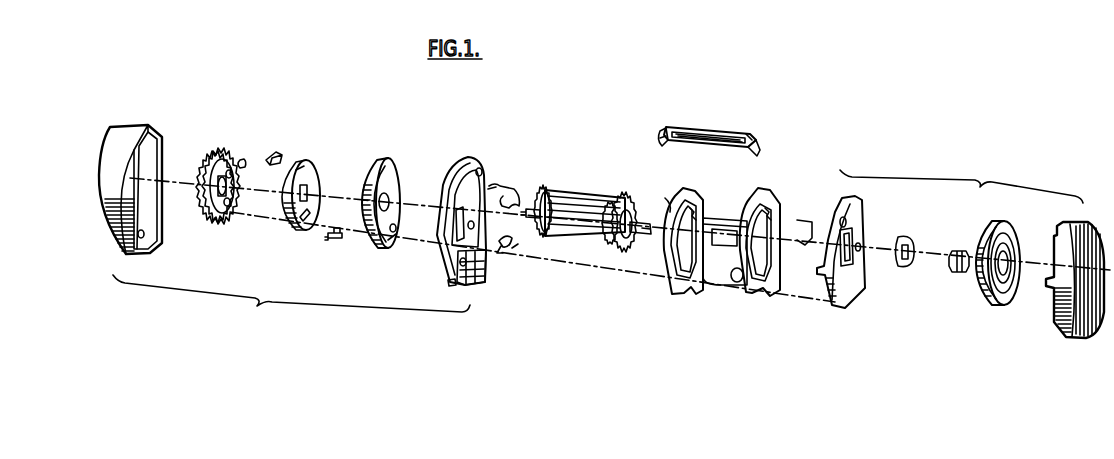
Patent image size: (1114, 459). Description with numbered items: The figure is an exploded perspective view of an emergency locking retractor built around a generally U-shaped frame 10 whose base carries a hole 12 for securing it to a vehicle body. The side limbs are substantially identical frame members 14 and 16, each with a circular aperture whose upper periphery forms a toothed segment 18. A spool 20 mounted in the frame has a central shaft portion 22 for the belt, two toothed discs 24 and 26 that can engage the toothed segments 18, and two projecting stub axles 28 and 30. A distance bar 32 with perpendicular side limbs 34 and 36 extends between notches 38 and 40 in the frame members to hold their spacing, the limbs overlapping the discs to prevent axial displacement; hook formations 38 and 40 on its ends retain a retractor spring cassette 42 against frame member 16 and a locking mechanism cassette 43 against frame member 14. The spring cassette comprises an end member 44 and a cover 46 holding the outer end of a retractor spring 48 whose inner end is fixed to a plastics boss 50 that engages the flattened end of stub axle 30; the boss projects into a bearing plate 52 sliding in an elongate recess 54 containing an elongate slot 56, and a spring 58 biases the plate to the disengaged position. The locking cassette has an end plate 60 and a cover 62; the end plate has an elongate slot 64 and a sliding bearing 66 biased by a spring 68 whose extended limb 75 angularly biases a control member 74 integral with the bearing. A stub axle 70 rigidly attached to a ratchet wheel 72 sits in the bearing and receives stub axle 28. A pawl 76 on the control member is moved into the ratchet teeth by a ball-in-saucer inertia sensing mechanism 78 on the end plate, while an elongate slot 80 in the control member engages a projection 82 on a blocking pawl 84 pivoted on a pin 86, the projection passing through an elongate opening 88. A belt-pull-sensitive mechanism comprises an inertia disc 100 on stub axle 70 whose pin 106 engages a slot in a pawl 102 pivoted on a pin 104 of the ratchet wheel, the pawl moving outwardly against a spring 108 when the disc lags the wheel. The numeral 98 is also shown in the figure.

The frame 10 is at (714, 222).
The hole 12 is at (740, 283).
The frame member 14 is at (681, 191).
The frame member 16 is at (765, 197).
The toothed segment 18 is at (695, 212).
The spool 20 is at (586, 216).
The central shaft portion 22 is at (584, 238).
The toothed disc 24 is at (546, 189).
The toothed disc 26 is at (625, 196).
The stub axle 28 is at (530, 222).
The stub axle 30 is at (637, 241).
The distance bar 32 is at (704, 128).
The side limb 34 is at (660, 146).
The side limb 36 is at (762, 152).
The notch / hook formation 38 is at (754, 138).
The notch / hook formation 40 is at (663, 134).
The retractor spring cassette 42 is at (961, 176).
The locking mechanism cassette 43 is at (291, 309).
The end member 44 is at (856, 302).
The cover 46 is at (1089, 339).
The retractor spring 48 is at (987, 305).
The plastics boss 50 is at (954, 274).
The bearing plate 52 is at (906, 270).
The elongate recess 54 is at (848, 224).
The elongate slot 56 is at (856, 236).
The spring 58 is at (810, 221).
The end plate 60 is at (461, 162).
The cover 62 is at (130, 126).
The elongate slot 64 is at (447, 230).
The sliding bearing 66 is at (396, 188).
The spring 68 is at (514, 186).
The stub axle 70 is at (224, 200).
The ratchet wheel 72 is at (208, 170).
The control member 74 is at (392, 248).
The extended limb 75 is at (493, 188).
The pawl 76 is at (331, 241).
The inertia sensing mechanism 78 is at (451, 304).
The elongate slot 80 is at (396, 228).
The projection 82 is at (500, 254).
The blocking pawl 84 is at (514, 250).
The pin 86 is at (474, 225).
The elongate opening 88 is at (457, 266).
The ring 98 is at (372, 245).
The inertia disc 100 is at (292, 228).
The pawl 102 is at (278, 152).
The pin 104 is at (228, 152).
The pin 106 is at (308, 166).
The spring 108 is at (152, 158).